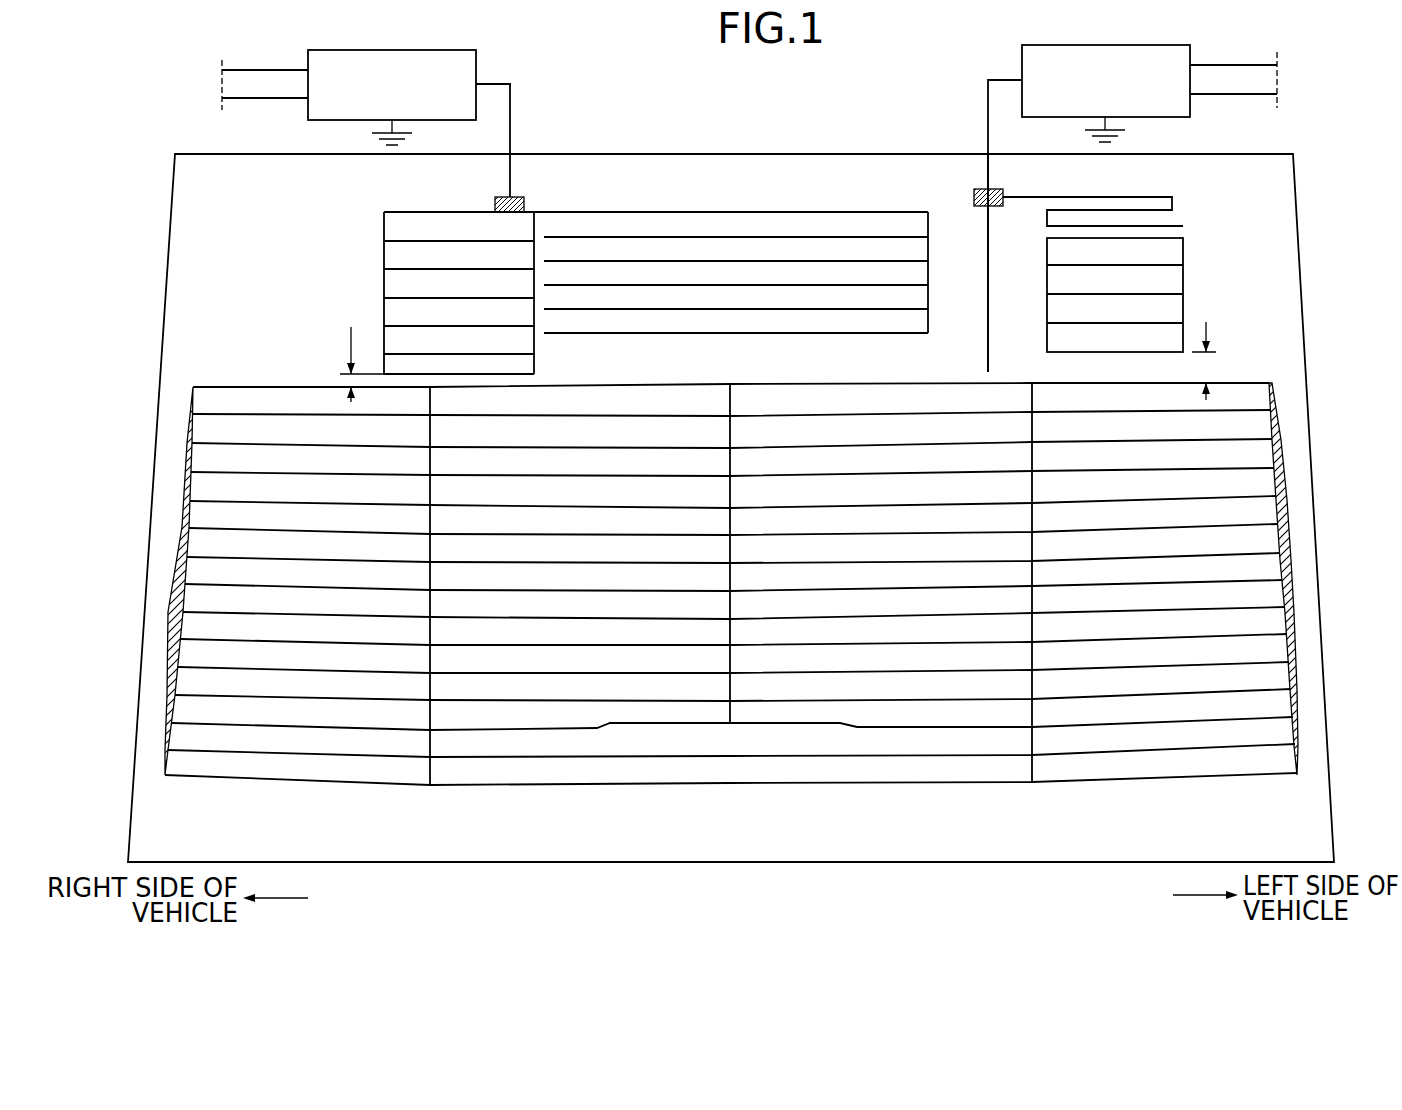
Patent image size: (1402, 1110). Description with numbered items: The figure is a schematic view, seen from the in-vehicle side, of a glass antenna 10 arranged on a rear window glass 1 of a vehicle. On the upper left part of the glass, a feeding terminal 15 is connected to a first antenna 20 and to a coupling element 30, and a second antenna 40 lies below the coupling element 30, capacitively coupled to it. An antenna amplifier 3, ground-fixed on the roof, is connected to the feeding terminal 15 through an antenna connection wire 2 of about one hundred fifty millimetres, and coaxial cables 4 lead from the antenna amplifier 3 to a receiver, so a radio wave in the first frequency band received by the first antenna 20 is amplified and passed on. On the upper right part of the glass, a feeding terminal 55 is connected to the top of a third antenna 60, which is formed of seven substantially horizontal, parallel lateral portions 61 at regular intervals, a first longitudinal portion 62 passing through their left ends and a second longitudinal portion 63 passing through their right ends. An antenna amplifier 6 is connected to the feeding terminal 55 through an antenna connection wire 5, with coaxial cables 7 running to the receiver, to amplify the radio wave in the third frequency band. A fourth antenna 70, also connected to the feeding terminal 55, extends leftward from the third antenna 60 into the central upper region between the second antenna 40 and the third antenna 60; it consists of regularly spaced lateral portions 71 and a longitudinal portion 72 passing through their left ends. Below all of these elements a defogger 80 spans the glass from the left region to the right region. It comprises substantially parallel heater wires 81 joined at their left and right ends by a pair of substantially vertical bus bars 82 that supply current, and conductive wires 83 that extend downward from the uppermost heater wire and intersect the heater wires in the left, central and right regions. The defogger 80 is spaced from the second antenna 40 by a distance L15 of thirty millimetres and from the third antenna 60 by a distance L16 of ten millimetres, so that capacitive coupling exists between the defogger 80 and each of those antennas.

The rear window glass 1 is at (1306, 235).
The antenna connection wire 2 is at (988, 98).
The antenna amplifier 3 is at (1100, 45).
The coaxial cables 4 is at (1220, 65).
The antenna connection wire 5 is at (510, 122).
The antenna amplifier 6 is at (430, 50).
The coaxial cables 7 is at (242, 70).
The glass antenna 10 is at (1142, 254).
The feeding terminal 15 is at (973, 197).
The first antenna 20 is at (978, 344).
The coupling element 30 is at (1112, 188).
The second antenna 40 is at (1195, 272).
The feeding terminal 55 is at (525, 197).
The third antenna 60 is at (451, 273).
The lateral portions 61 is at (415, 213).
The first longitudinal portion 62 is at (534, 345).
The second longitudinal portion 63 is at (384, 277).
The fourth antenna 70 is at (754, 248).
The lateral portions 71 is at (768, 212).
The longitudinal portion 72 is at (928, 275).
The defogger 80 is at (731, 583).
The heater wires 81 is at (680, 387).
The bus bars 82 is at (183, 513).
The conductive wires 83 is at (730, 723).
The distance L15 is at (1226, 361).
The distance L16 is at (341, 364).